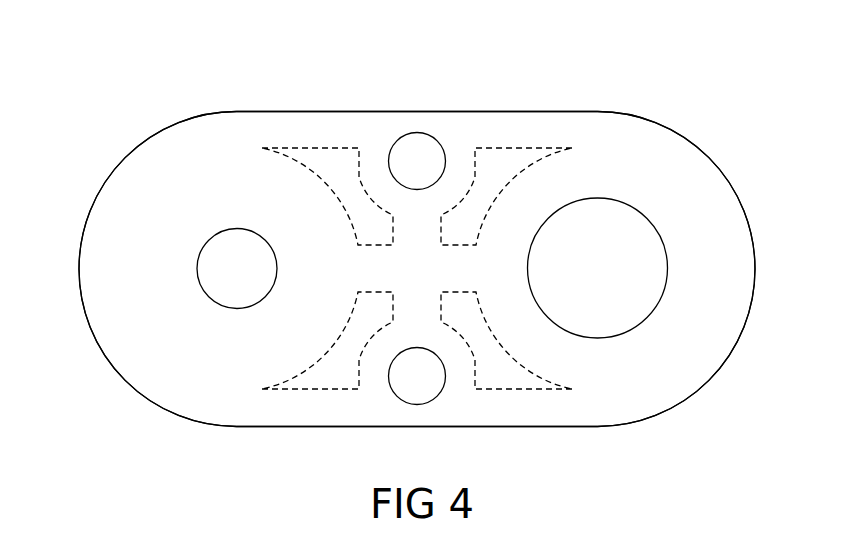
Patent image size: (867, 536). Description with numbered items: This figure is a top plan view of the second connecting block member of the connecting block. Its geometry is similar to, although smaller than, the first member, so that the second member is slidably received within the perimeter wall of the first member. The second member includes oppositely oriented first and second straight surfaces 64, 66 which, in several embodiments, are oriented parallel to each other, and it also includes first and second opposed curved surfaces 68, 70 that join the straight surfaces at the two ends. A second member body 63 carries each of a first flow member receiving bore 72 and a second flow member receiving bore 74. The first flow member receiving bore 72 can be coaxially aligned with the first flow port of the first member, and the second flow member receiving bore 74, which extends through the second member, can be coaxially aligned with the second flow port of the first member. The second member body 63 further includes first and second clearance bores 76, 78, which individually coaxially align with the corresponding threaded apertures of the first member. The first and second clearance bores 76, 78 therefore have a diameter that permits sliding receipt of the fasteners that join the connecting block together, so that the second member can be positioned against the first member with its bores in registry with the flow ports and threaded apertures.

The second member body 63 is at (685, 383).
The first straight surface 64 is at (479, 103).
The second straight surface 66 is at (512, 436).
The first curved surface 68 is at (72, 310).
The second curved surface 70 is at (764, 310).
The first flow member receiving bore 72 is at (213, 283).
The second flow member receiving bore 74 is at (617, 228).
The first clearance bore 76 is at (419, 150).
The second clearance bore 78 is at (412, 386).